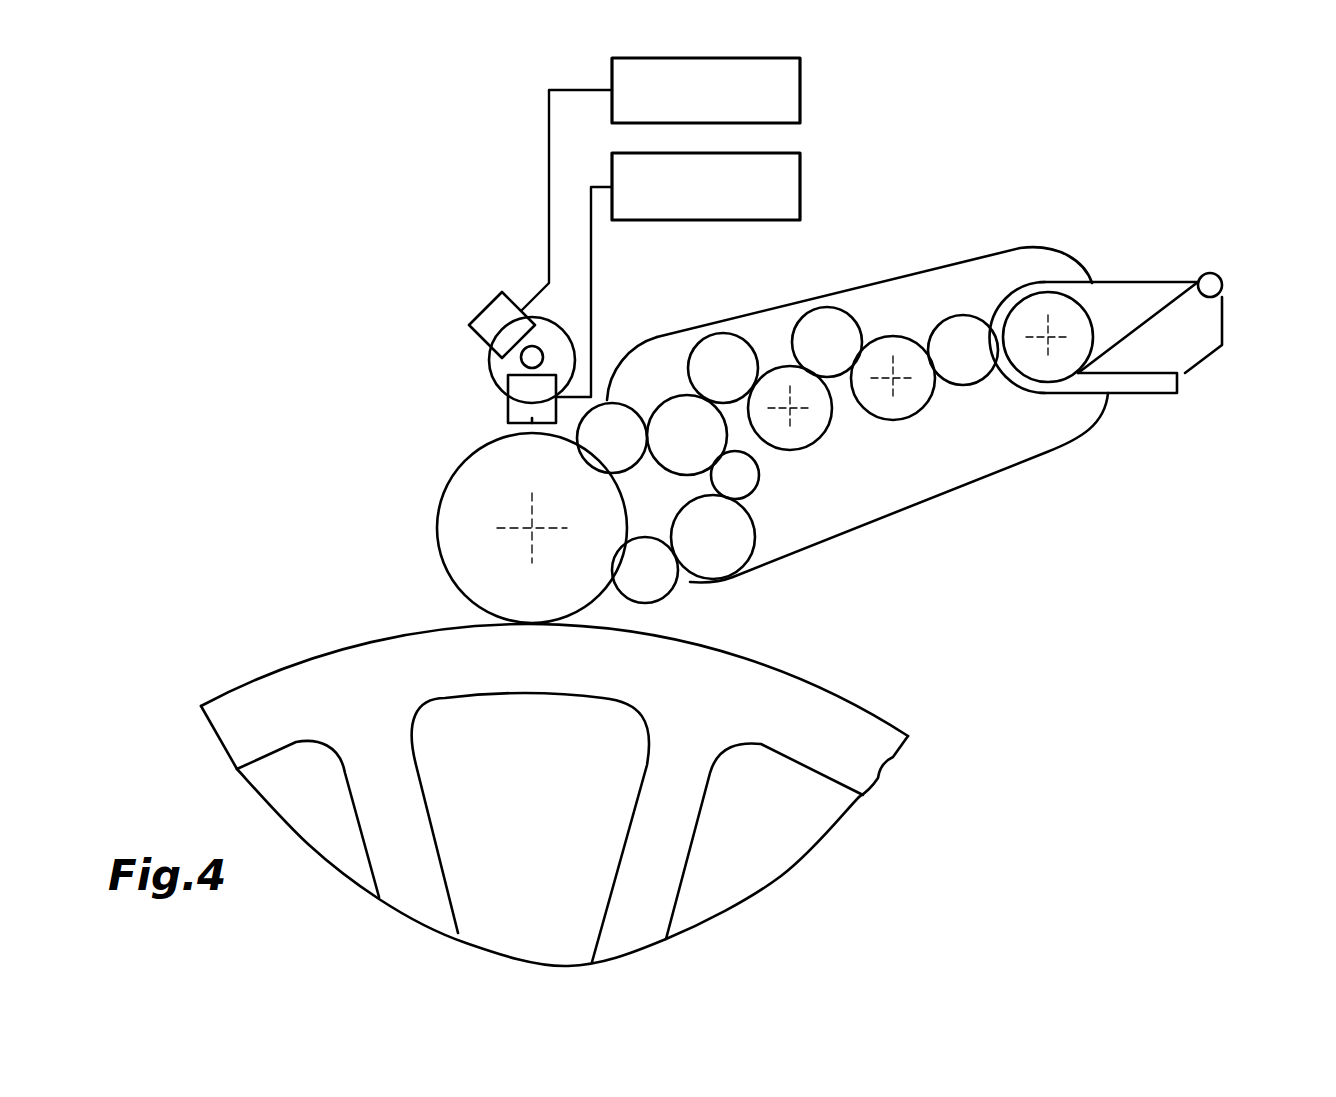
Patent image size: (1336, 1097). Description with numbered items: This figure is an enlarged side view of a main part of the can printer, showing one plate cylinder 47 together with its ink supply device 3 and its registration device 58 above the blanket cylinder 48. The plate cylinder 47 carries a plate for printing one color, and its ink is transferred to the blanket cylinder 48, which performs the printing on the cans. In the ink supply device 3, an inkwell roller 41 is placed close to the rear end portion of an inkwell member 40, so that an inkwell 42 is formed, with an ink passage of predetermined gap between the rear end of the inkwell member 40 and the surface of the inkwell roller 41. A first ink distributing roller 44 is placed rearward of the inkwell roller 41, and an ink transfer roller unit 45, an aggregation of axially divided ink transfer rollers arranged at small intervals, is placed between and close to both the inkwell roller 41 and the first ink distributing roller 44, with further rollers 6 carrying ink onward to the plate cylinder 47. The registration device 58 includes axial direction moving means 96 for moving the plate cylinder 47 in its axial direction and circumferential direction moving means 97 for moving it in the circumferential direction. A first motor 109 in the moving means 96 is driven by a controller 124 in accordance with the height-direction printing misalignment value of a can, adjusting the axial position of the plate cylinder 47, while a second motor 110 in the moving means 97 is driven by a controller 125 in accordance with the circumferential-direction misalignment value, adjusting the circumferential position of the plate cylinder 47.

The ink supply device 3 is at (938, 384).
The roller 6 is at (721, 346).
The inkwell member 40 is at (1203, 325).
The inkwell roller 41 is at (1040, 296).
The inkwell 42 is at (1130, 297).
The first ink distributing roller 44 is at (892, 338).
The ink transfer roller unit 45 is at (950, 317).
The plate cylinder 47 is at (438, 531).
The blanket cylinder 48 is at (326, 653).
The registration device 58 is at (479, 333).
The axial direction moving means 96 is at (508, 412).
The circumferential direction moving means 97 is at (472, 345).
The first motor 109 is at (535, 418).
The second motor 110 is at (497, 300).
The controller 124 is at (801, 184).
The controller 125 is at (801, 88).